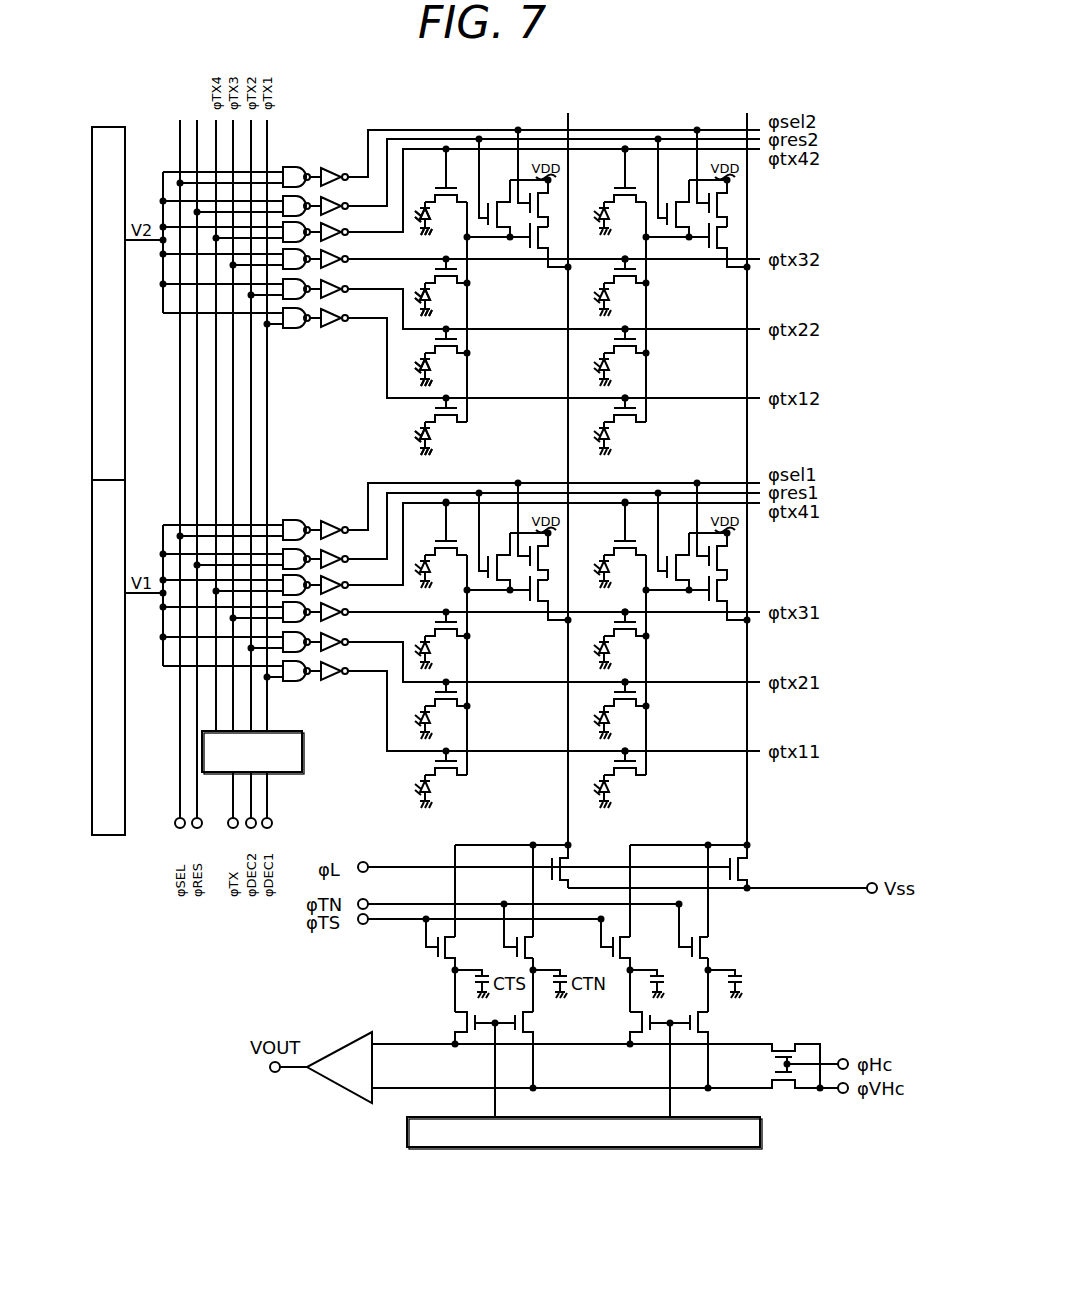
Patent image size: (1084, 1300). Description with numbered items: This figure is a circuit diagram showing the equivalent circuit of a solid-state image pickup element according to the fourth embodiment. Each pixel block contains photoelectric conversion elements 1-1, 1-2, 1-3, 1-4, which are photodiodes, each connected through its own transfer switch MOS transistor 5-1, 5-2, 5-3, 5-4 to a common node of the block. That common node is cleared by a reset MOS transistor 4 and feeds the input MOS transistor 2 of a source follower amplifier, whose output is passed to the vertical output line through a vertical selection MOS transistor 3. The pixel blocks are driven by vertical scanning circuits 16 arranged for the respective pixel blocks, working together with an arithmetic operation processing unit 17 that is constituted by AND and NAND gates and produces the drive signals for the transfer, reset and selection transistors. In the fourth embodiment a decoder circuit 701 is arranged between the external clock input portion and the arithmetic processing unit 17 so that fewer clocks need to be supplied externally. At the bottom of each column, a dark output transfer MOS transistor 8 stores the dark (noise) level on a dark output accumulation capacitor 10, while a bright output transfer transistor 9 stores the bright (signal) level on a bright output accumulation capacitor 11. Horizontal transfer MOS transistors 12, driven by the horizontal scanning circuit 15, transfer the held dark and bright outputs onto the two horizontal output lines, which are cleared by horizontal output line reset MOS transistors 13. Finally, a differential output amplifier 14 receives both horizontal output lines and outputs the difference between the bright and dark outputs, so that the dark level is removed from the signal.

The photoelectric conversion element 1-1 is at (431, 440).
The photoelectric conversion element 1-2 is at (431, 370).
The photodiode 1-3 is at (431, 300).
The photodiode 1-4 is at (420, 203).
The transfer switch MOS transistor 5-1 is at (458, 415).
The transfer switch MOS transistor 5-2 is at (458, 346).
The transfer MOS transistor 5-3 is at (458, 276).
The transfer MOS transistor 5-4 is at (441, 185).
The reset MOS transistor 4 is at (494, 200).
The vertical selection MOS transistor 3 is at (550, 206).
The input MOS transistor of a source follower amplifier 2 is at (552, 204).
The dark output transfer MOS transistor 8 is at (530, 945).
The bright output transfer transistor 9 is at (426, 952).
The dark output accumulation capacitor 10 is at (568, 992).
The bright output accumulation capacitor 11 is at (474, 983).
The horizontal transfer MOS transistor 12 is at (565, 1058).
The horizontal output line reset MOS transistor 13 is at (795, 1124).
The differential output amplifier 14 is at (338, 1082).
The horizontal scanning circuit 15 is at (714, 1149).
The vertical scanning circuit 16 is at (113, 836).
The arithmetic operation processing unit 17 is at (348, 691).
The decoder circuit 701 is at (302, 757).